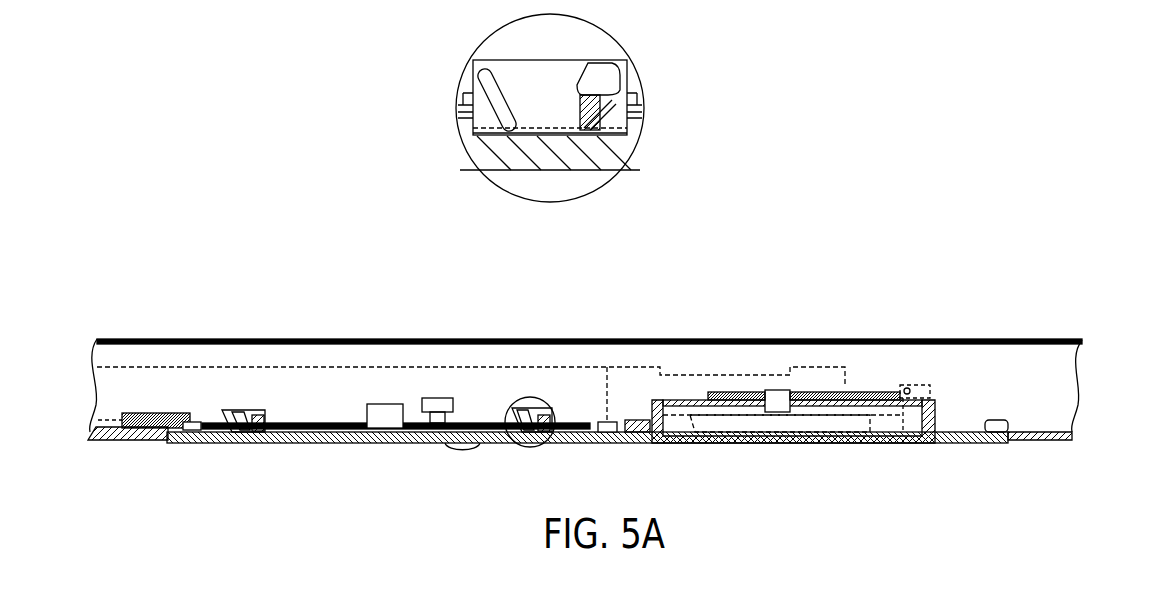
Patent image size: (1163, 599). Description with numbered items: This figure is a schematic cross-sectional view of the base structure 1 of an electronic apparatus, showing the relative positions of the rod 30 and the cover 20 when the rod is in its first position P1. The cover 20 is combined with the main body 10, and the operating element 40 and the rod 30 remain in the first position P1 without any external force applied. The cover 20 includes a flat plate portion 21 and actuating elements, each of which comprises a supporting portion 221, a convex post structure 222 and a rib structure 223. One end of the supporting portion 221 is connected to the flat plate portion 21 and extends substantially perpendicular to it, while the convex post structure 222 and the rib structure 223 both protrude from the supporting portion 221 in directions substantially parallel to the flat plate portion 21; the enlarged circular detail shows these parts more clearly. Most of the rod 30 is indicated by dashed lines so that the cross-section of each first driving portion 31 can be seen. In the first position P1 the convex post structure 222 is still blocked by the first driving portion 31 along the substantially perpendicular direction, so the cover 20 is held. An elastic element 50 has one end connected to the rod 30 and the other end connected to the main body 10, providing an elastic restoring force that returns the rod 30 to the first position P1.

The base structure 1 is at (1037, 243).
The main body 10 is at (1060, 340).
The cover 20 is at (367, 445).
The flat plate portion 21 is at (588, 168).
The rod 30 is at (539, 378).
The first driving portion 31 is at (604, 118).
The operating element 40 is at (810, 434).
The elastic element 50 is at (878, 393).
The supporting portion 221 is at (228, 410).
The convex post structure 222 is at (610, 75).
The rib structure 223 is at (478, 68).
The first position P1 is at (870, 438).